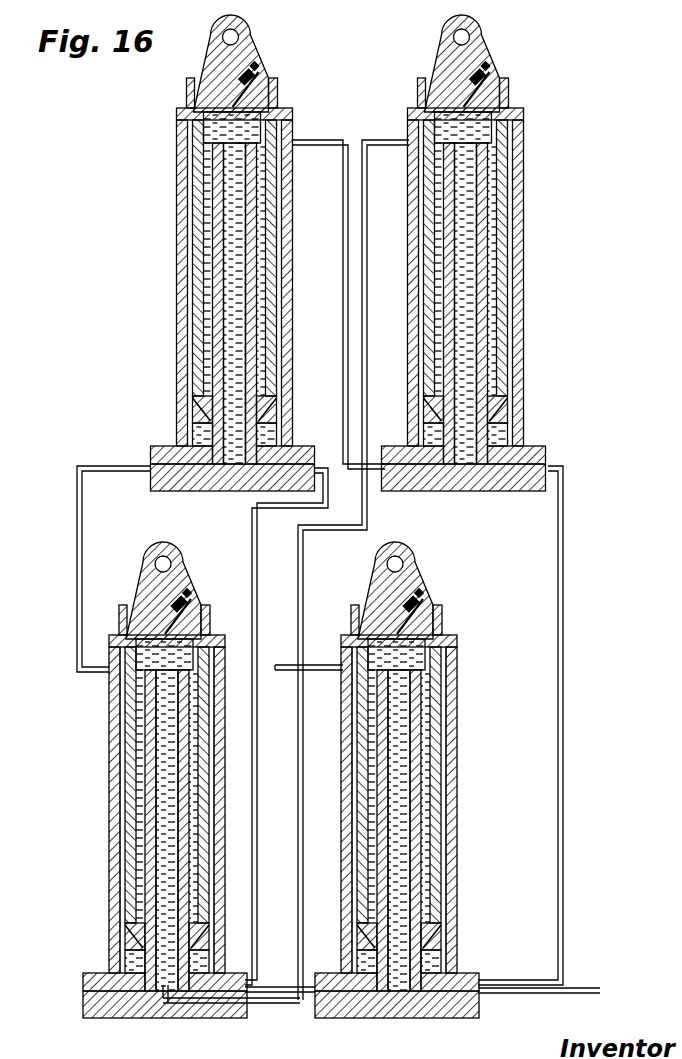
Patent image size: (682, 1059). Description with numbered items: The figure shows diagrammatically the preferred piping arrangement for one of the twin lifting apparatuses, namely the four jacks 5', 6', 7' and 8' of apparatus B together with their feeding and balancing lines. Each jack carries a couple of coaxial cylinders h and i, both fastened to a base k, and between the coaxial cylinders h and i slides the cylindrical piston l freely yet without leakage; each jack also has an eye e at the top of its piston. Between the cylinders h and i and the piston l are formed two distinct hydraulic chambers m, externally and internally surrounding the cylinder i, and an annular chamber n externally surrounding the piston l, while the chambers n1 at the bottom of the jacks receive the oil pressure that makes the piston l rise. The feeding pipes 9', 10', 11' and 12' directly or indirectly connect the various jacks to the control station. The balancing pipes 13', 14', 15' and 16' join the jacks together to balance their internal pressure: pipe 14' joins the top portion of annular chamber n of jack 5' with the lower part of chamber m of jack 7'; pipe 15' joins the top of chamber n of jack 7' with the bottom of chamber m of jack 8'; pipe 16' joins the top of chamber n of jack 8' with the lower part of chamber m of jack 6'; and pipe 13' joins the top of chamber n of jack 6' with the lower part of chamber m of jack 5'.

The eye of piston head e is at (242, 36).
The outer coaxial cylinder h is at (177, 152).
The inner coaxial cylinder i is at (206, 186).
The piston l is at (214, 230).
The hydraulic chamber m is at (228, 292).
The annular chamber n is at (190, 330).
The pressure chamber n1 is at (181, 440).
The base k is at (185, 495).
The jack 5' is at (420, 780).
The jack 6' is at (491, 254).
The jack 7' is at (145, 780).
The jack 8' is at (211, 254).
The feeding pipe 9' is at (542, 964).
The feeding pipe 10' is at (555, 725).
The feeding pipe 11' is at (239, 1011).
The feeding pipe 12' is at (286, 726).
The balancing pipe 13' is at (356, 570).
The balancing pipe 14' is at (303, 641).
The balancing pipe 15' is at (113, 569).
The balancing pipe 16' is at (339, 304).